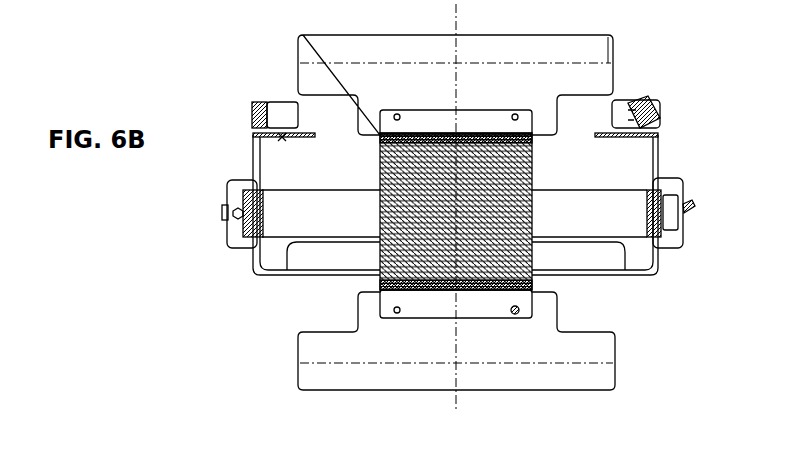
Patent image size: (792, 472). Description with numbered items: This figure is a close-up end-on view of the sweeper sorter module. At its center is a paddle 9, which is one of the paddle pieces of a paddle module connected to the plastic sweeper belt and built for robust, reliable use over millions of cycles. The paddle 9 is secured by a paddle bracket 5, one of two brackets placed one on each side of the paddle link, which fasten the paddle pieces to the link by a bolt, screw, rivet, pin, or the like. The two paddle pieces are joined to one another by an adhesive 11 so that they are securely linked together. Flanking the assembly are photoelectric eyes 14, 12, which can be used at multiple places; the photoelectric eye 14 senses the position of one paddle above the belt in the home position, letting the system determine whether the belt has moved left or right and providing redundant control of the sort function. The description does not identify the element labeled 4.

The bolt 4 is at (481, 101).
The paddle bracket 5 is at (445, 197).
The paddle 9 is at (550, 73).
The adhesive 11 is at (258, 322).
The photoelectric eye 12 is at (280, 113).
The photoelectric eye 14 is at (655, 122).